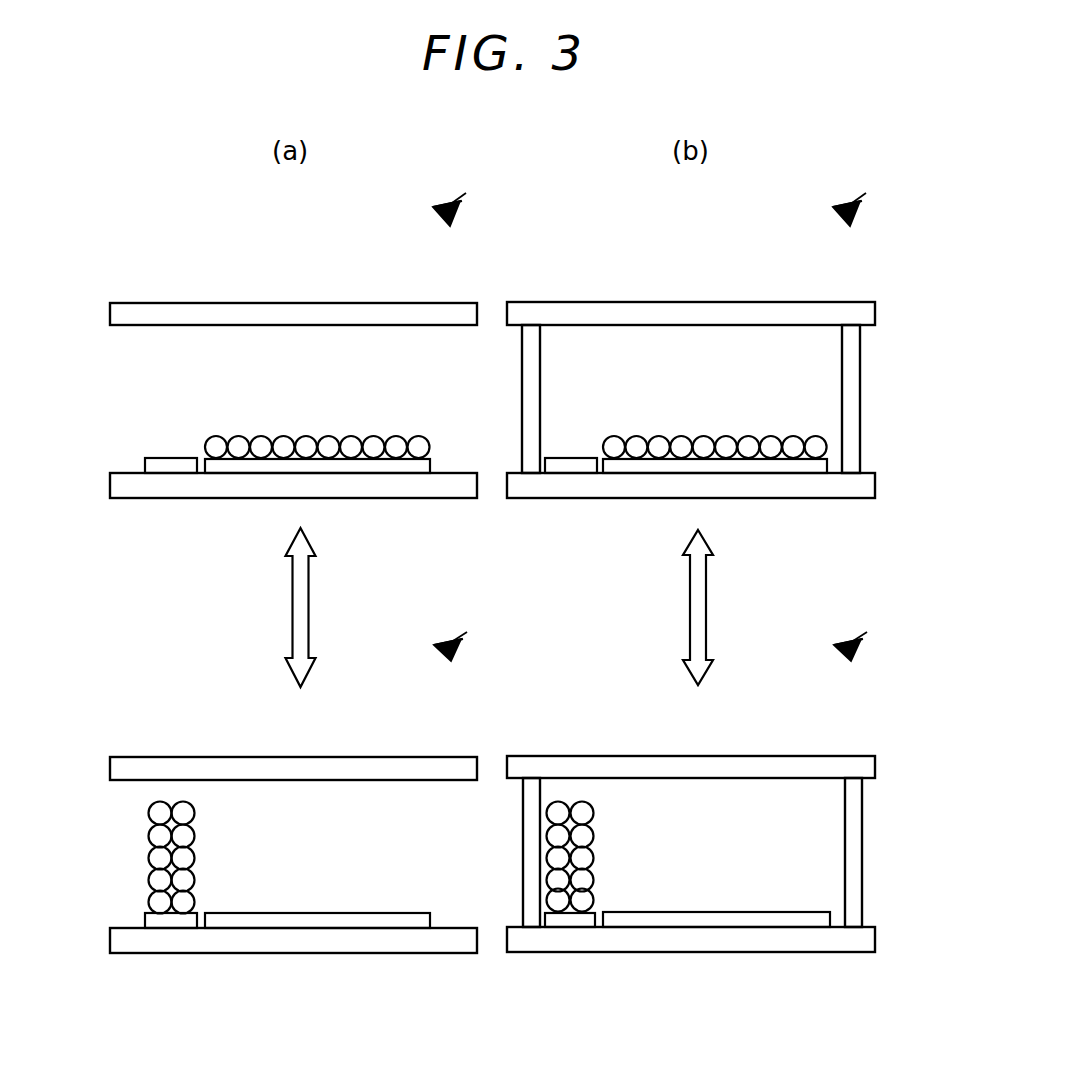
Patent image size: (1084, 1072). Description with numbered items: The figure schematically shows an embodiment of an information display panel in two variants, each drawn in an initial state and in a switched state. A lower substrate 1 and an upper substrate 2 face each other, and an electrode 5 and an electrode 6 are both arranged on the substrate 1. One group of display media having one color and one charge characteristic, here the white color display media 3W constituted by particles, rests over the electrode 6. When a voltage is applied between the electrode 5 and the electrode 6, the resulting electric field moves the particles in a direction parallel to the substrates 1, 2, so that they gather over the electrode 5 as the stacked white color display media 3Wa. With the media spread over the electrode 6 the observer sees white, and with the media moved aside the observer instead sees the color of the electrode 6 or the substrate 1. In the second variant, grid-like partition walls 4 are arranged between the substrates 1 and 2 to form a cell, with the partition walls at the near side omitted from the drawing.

The substrate 1 is at (248, 488).
The substrate 2 is at (316, 313).
The white color display media 3W is at (206, 422).
The white color display media 3Wa is at (188, 857).
The partition walls 4 is at (532, 394).
The electrode 5 is at (168, 470).
The electrode 6 is at (395, 468).